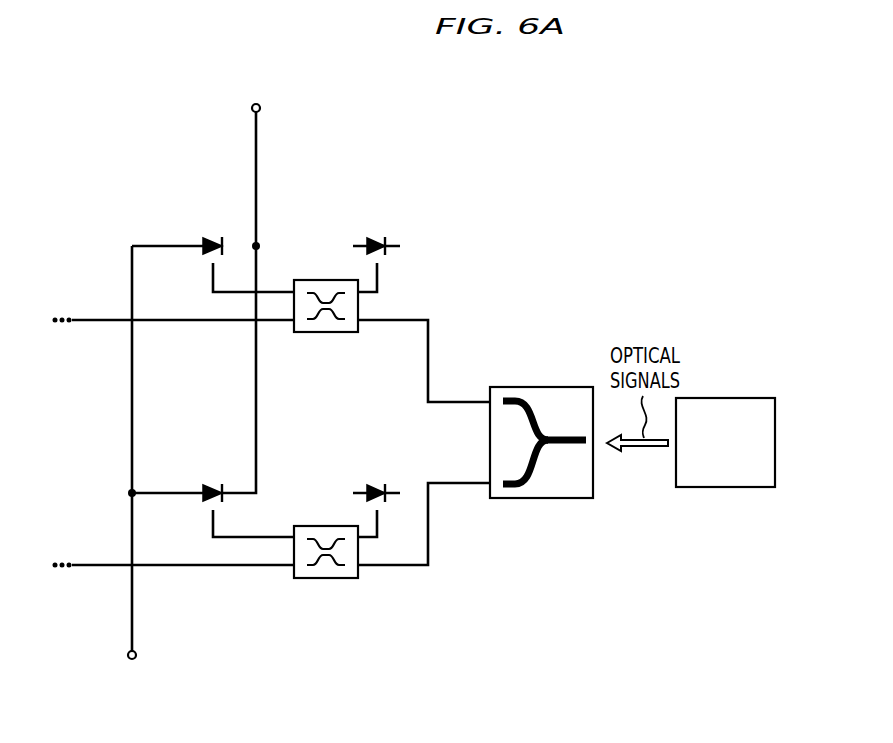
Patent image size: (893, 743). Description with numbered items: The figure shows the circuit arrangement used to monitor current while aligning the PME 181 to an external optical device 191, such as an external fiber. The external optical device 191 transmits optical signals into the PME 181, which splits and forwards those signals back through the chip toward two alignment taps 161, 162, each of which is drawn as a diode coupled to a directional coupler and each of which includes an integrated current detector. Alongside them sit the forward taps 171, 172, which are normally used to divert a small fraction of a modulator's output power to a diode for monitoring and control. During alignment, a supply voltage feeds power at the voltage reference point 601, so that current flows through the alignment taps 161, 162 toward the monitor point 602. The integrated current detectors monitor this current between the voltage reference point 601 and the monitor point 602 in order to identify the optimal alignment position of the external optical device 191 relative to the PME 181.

The voltage reference point 601 is at (256, 56).
The monitor point 602 is at (132, 697).
The alignment tap 161 is at (210, 238).
The alignment tap 162 is at (210, 485).
The forward tap 171 is at (377, 208).
The forward tap 172 is at (377, 454).
The PME 181 is at (541, 459).
The external optical device 191 is at (756, 398).